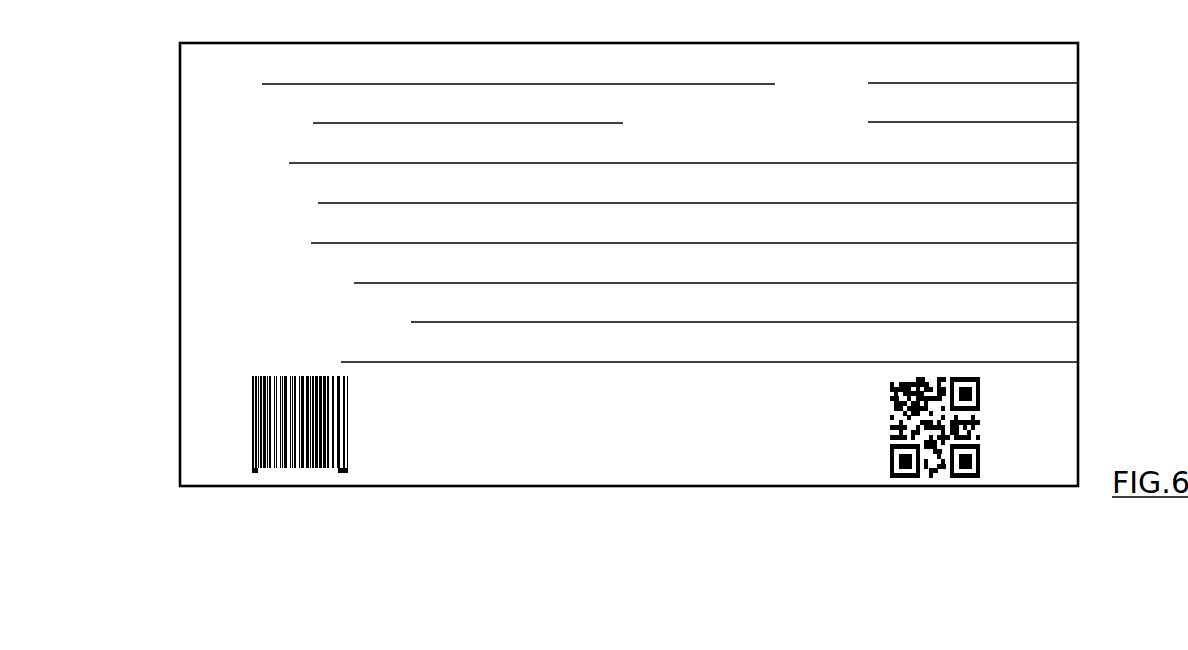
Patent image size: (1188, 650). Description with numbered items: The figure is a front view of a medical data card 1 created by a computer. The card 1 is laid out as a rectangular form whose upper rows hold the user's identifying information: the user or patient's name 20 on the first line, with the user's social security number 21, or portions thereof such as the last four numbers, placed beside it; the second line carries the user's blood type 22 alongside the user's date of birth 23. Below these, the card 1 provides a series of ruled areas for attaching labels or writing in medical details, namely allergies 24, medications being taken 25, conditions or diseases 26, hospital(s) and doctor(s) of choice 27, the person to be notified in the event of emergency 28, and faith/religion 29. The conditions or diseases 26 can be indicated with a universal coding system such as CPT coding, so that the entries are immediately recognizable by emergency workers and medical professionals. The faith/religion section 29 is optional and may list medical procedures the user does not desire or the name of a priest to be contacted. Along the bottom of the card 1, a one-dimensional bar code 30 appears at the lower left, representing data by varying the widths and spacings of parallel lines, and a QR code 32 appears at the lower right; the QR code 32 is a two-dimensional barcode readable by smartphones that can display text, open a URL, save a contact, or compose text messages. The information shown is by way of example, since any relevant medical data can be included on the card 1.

The medical data card 1 is at (1080, 188).
The name 20 is at (208, 50).
The social security number 21 is at (1062, 72).
The blood type 22 is at (208, 100).
The date of birth 23 is at (1066, 114).
The allergies 24 is at (207, 138).
The medications being taken 25 is at (206, 175).
The conditions or diseases 26 is at (203, 215).
The hospital(s) and doctor(s) of choice 27 is at (203, 258).
The person to be notified 28 is at (200, 293).
The faith/religion section 29 is at (198, 337).
The bar code 30 is at (252, 418).
The QR code 32 is at (982, 390).